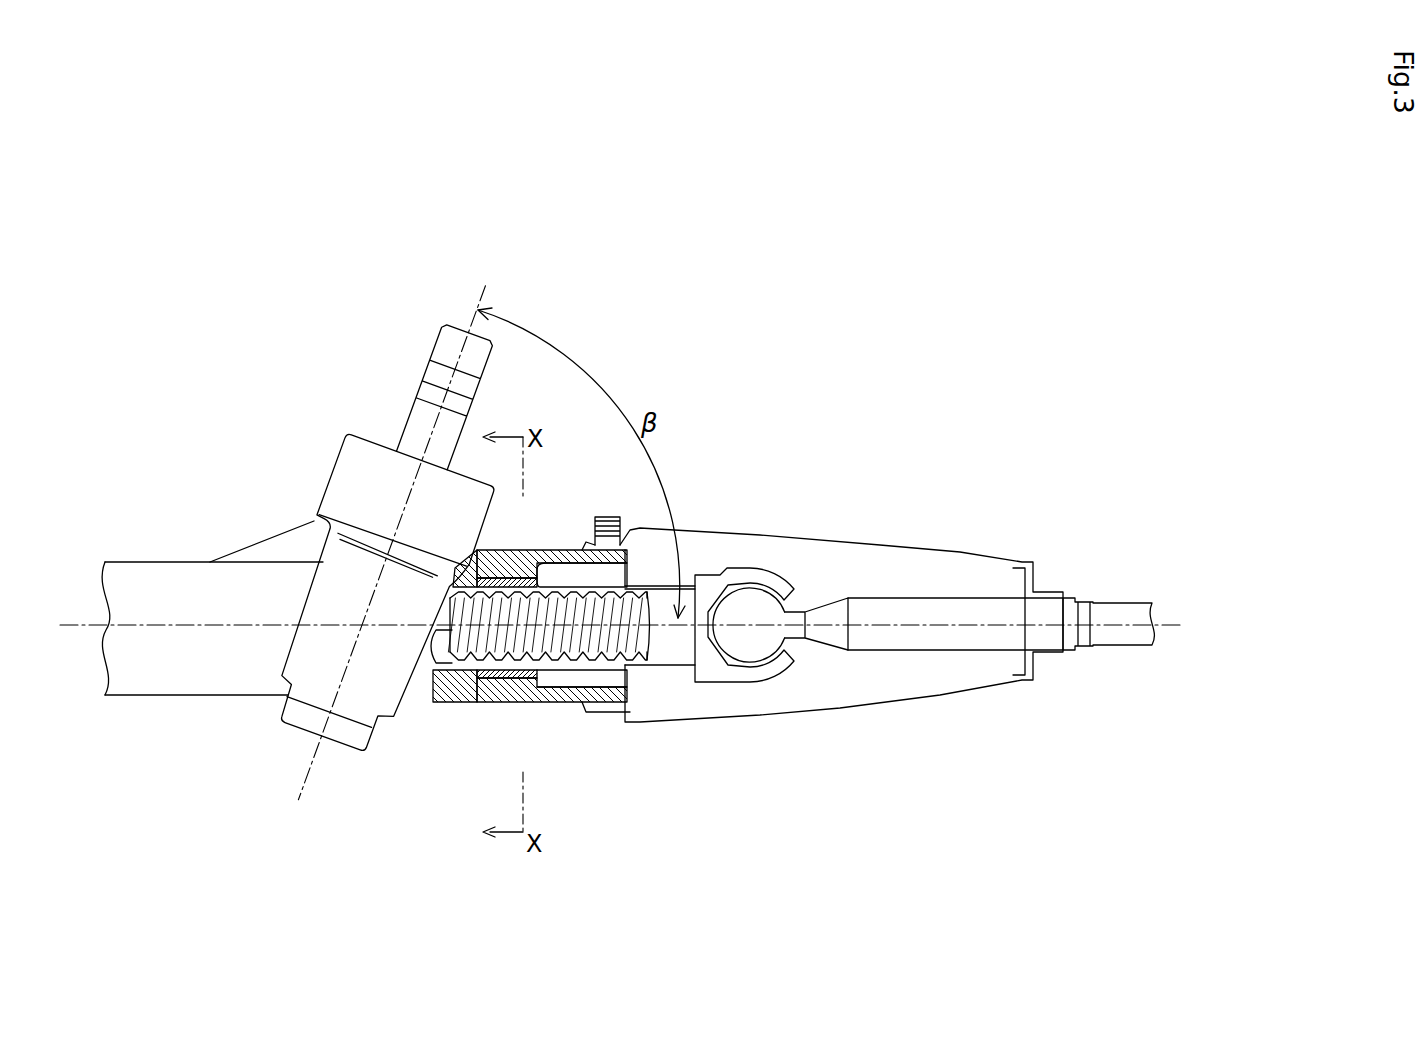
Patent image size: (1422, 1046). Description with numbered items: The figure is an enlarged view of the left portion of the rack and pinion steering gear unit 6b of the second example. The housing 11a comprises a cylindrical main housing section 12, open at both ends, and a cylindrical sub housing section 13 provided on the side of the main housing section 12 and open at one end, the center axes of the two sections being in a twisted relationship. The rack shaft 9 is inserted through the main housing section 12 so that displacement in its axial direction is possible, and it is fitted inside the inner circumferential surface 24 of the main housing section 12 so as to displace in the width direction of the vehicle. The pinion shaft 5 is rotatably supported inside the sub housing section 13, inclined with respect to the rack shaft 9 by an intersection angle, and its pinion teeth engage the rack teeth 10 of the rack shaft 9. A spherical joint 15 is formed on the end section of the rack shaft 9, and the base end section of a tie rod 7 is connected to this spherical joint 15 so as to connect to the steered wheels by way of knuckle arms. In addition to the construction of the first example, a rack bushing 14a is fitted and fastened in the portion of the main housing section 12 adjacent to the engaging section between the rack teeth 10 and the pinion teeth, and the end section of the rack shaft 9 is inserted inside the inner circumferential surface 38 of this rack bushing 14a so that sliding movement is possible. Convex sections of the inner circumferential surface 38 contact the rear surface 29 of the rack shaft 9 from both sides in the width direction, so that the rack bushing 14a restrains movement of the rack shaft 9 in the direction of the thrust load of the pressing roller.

The pinion shaft 5 is at (447, 342).
The steering gear unit 6b is at (685, 376).
The tie rod 7 is at (1128, 607).
The rack shaft 9 is at (675, 652).
The rack teeth 10 is at (572, 585).
The housing 11a is at (158, 558).
The main housing section 12 is at (166, 670).
The sub housing section 13 is at (390, 680).
The rack bushing 14a is at (520, 702).
The spherical joint 15 is at (747, 578).
The inner circumferential surface 24 is at (460, 702).
The rear surface 29 is at (612, 712).
The inner circumferential surface 38 is at (497, 689).